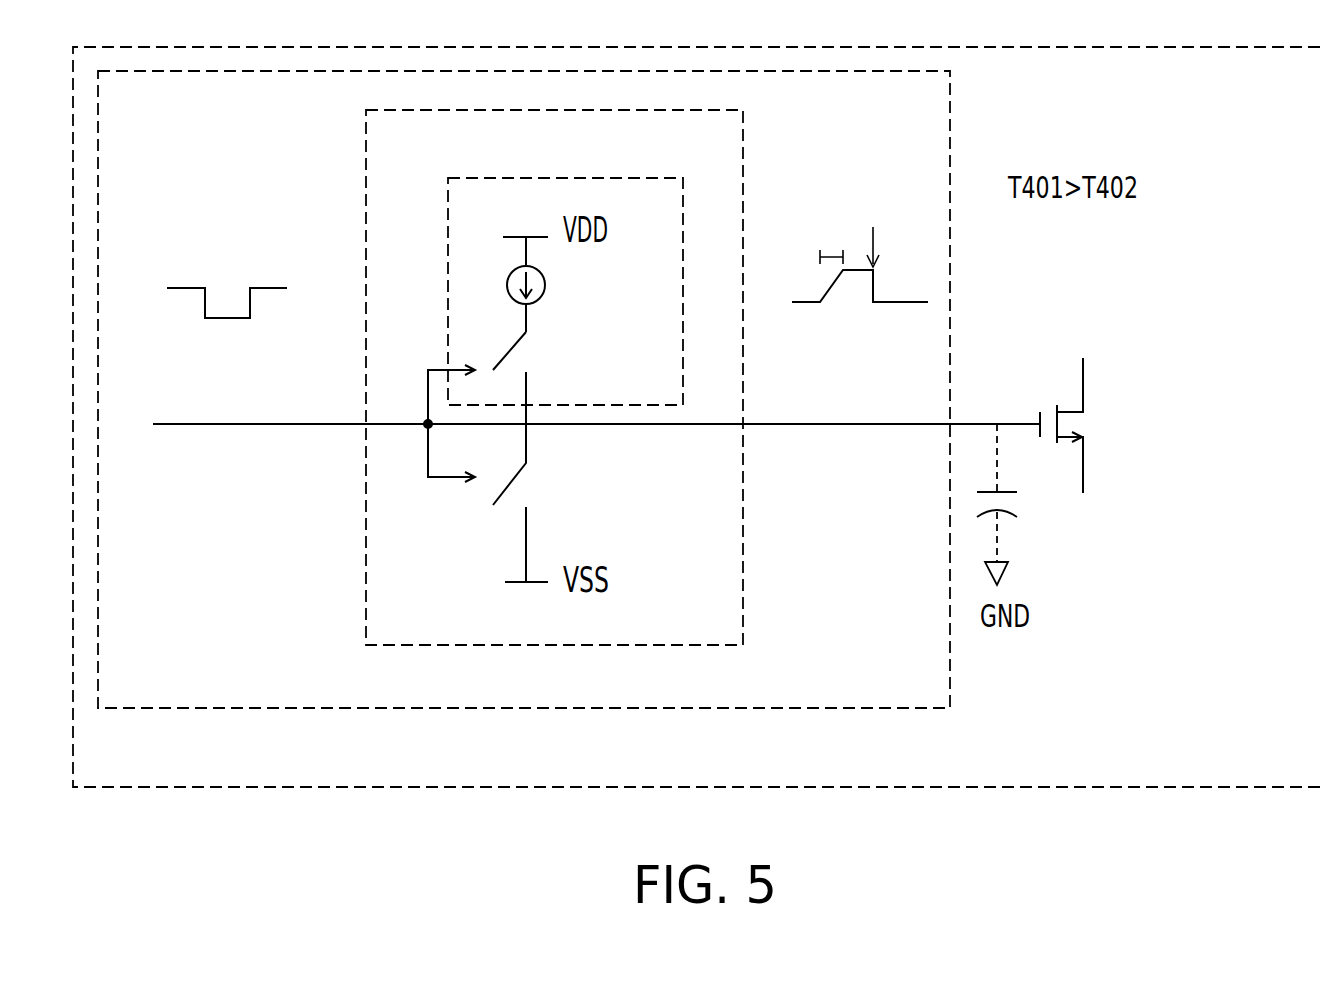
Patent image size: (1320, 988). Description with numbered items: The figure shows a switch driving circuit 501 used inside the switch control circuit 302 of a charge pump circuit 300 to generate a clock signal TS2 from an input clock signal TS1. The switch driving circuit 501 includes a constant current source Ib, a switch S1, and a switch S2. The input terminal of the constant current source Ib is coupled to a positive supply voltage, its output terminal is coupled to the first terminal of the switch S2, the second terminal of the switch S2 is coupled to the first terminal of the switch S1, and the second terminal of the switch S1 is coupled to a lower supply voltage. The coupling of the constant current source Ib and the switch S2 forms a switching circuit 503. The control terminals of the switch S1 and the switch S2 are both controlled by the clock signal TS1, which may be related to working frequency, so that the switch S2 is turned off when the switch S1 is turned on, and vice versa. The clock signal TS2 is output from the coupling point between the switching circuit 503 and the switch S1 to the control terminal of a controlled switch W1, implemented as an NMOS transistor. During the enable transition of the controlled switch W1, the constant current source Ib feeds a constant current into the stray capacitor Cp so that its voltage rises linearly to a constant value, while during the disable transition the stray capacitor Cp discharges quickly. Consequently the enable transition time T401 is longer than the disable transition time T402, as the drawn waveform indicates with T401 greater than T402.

The charge pump circuit 300 is at (933, 48).
The switch control circuit 302 is at (950, 100).
The switch driving circuit 501 is at (743, 137).
The switching circuit 503 is at (508, 178).
The switch S1 is at (528, 503).
The switch S2 is at (527, 375).
The constant current source Ib is at (544, 284).
The clock signal TS1 is at (187, 424).
The clock signal TS2 is at (813, 424).
The controlled switch W1 is at (1091, 425).
The stray capacitor Cp is at (1016, 504).
The time required for enable transition T401 is at (822, 252).
The time required for disable transition T402 is at (877, 228).